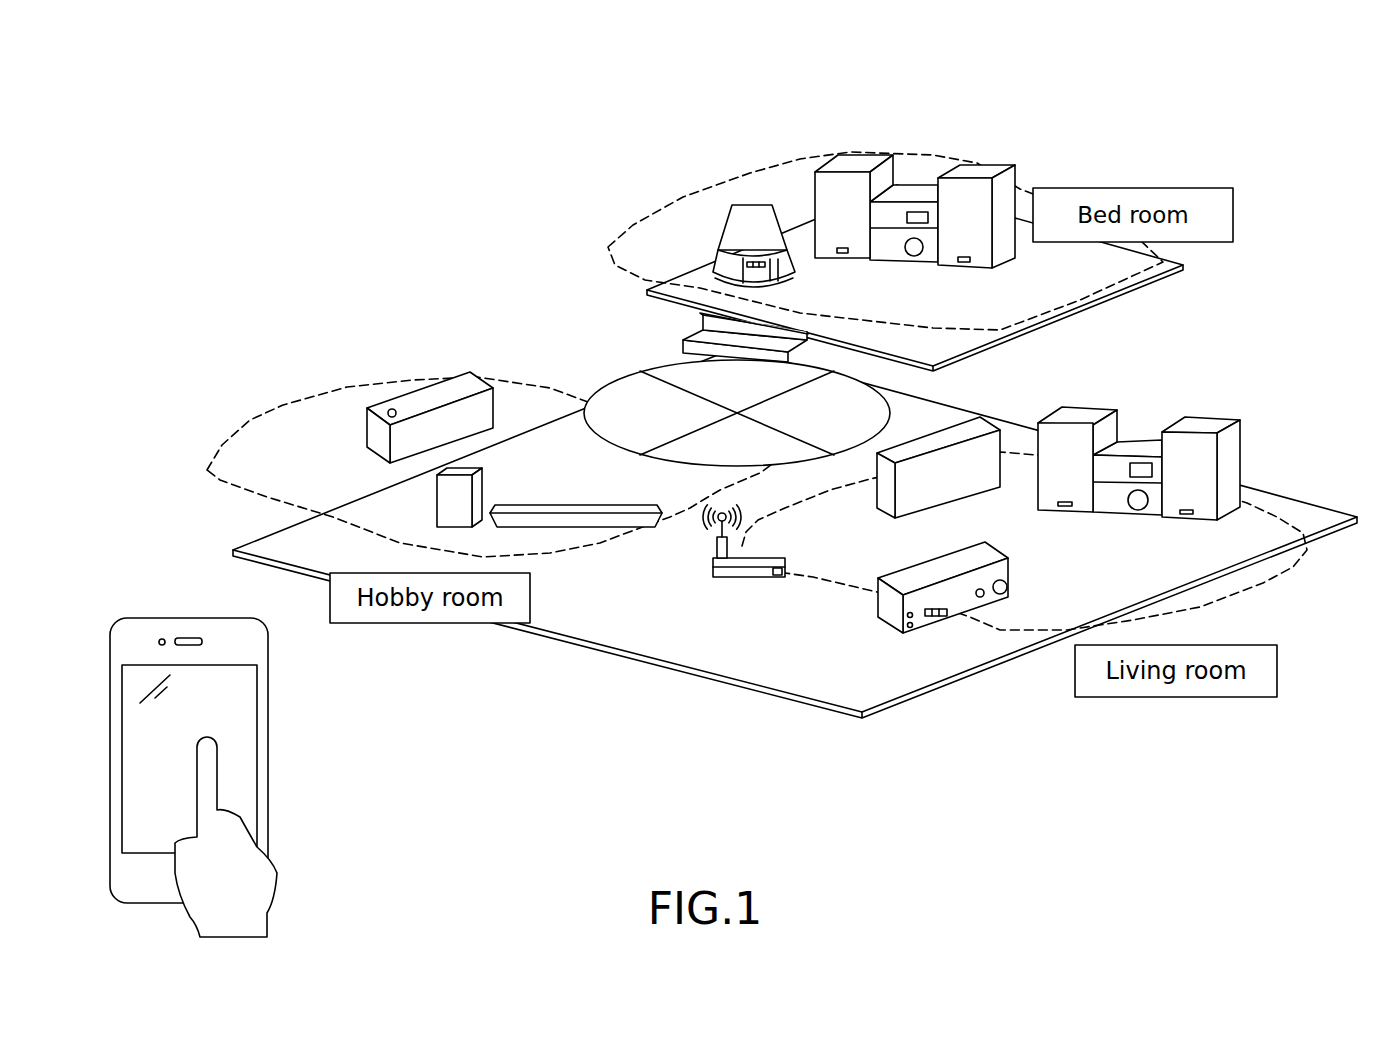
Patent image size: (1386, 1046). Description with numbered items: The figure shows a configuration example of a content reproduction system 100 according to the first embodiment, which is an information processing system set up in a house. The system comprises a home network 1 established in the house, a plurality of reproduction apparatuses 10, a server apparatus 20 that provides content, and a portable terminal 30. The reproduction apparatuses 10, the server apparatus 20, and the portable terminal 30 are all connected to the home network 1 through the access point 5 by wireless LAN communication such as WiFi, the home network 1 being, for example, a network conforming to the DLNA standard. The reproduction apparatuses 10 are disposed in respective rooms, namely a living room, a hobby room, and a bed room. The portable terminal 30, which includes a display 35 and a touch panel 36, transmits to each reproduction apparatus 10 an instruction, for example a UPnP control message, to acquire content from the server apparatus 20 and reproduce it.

The content reproduction system 100 is at (672, 137).
The home network 1 is at (625, 377).
The access point 5 is at (713, 568).
The reproduction apparatus 10 is at (433, 382).
The server apparatus 20 is at (971, 417).
The portable terminal 30 is at (243, 744).
The display 35 is at (243, 747).
The touch panel 36 is at (155, 689).